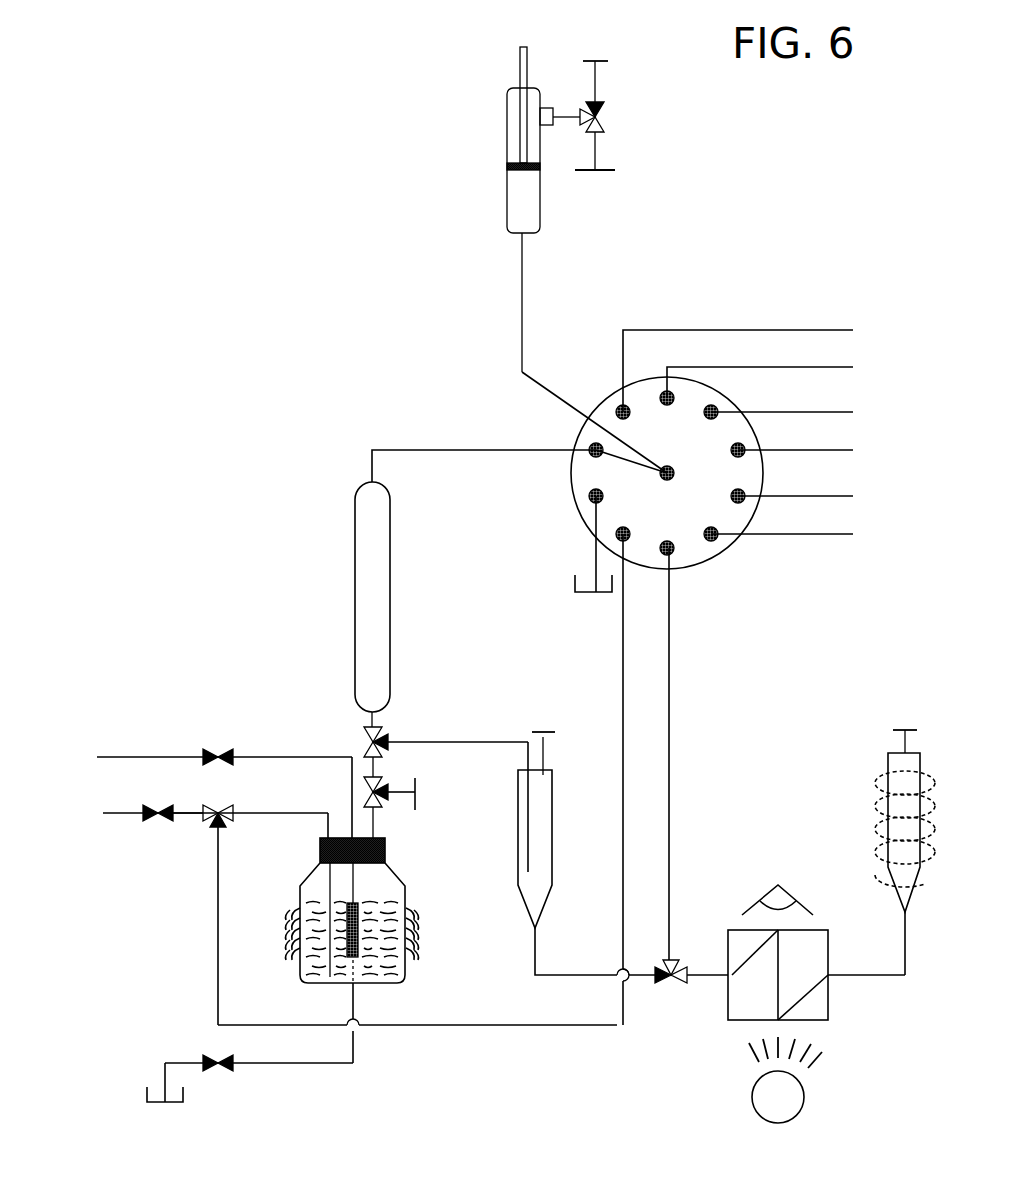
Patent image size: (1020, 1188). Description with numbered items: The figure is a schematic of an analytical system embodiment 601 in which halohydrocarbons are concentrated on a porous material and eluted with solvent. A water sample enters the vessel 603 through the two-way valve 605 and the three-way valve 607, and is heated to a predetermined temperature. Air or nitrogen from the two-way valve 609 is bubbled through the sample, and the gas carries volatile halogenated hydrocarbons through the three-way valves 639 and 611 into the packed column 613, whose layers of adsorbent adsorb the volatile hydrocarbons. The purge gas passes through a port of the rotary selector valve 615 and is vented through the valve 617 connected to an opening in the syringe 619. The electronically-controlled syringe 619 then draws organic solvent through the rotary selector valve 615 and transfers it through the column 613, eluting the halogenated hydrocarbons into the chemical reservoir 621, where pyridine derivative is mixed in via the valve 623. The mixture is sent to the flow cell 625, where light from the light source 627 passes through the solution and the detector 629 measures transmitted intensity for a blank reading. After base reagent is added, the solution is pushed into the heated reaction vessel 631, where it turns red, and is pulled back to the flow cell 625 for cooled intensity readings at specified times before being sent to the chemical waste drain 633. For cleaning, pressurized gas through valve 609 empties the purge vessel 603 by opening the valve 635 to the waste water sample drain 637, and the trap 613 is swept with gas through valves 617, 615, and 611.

The analytical system embodiment 601 is at (744, 237).
The vessel 603 is at (395, 983).
The two-way valve 605 is at (155, 817).
The three-way valve 607 is at (221, 823).
The two-way valve 609 is at (219, 754).
The three-way valve 611 is at (366, 738).
The packed column 613 is at (390, 627).
The rotary selector valve 615 is at (714, 557).
The valve 617 is at (601, 112).
The syringe 619 is at (507, 105).
The chemical reservoir 621 is at (525, 910).
The valve 623 is at (665, 981).
The flow cell 625 is at (732, 1022).
The light source 627 is at (752, 1098).
The detector 629 is at (772, 888).
The heated reservoir or reaction vessel 631 is at (888, 768).
The chemical waste drain or container 633 is at (590, 594).
The valve 635 is at (214, 1068).
The waste water sample drain 637 is at (163, 1104).
The three-way valve 639 is at (380, 800).